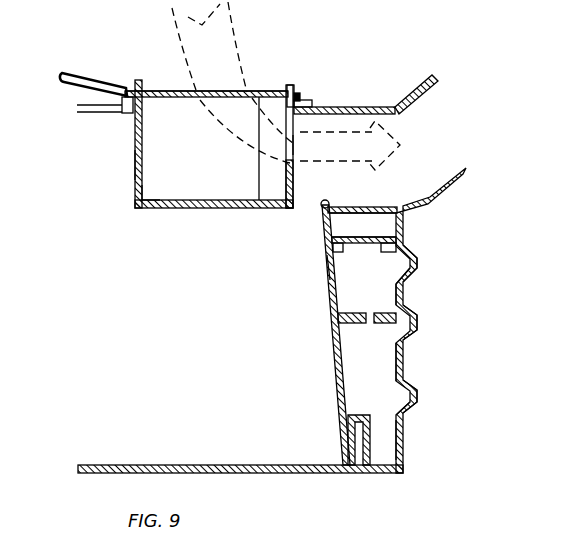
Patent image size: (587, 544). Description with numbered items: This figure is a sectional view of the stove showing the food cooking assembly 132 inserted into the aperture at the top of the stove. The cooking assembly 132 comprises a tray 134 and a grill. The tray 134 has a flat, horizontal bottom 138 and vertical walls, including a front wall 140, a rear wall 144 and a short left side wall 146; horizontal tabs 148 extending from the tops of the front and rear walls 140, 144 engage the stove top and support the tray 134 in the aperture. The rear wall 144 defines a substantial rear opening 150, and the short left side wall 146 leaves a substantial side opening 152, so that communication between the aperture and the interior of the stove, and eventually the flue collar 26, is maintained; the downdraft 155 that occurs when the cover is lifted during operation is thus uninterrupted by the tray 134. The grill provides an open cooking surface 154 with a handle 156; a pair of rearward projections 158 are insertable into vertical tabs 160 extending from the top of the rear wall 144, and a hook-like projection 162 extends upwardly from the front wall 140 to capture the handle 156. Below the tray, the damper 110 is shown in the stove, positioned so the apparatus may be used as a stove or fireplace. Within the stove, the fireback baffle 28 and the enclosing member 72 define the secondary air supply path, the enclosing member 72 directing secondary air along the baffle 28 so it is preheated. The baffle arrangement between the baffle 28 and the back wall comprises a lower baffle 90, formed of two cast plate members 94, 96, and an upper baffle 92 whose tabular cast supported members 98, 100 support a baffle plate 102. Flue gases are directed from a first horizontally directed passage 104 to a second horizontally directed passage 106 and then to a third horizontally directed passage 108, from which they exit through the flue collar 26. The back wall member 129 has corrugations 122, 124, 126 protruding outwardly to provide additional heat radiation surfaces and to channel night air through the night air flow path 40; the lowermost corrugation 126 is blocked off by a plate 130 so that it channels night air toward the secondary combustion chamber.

The flue collar 26 is at (412, 82).
The fireback baffle 28 is at (328, 300).
The night air flow path 40 is at (402, 412).
The enclosing member 72 is at (386, 452).
The lower baffle 90 is at (387, 312).
The upper baffle 92 is at (361, 247).
The cast plate member 94 is at (337, 350).
The cast plate member 96 is at (404, 345).
The tabular cast supported member 98 is at (328, 267).
The tabular cast supported member 100 is at (403, 260).
The baffle plate 102 is at (378, 236).
The first horizontally directed passage 104 is at (403, 369).
The second horizontally directed passage 106 is at (406, 287).
The third horizontally directed passage 108 is at (353, 125).
The damper 110 is at (347, 204).
The corrugation 122 is at (419, 266).
The corrugation 124 is at (418, 323).
The lowermost corrugation 126 is at (416, 395).
The lower wall portion 129 is at (401, 438).
The plate 130 is at (394, 408).
The food cooking assembly 132 is at (273, 57).
The tray 134 is at (134, 166).
The bottom 138 is at (163, 208).
The front wall 140 is at (134, 186).
The rear wall 144 is at (296, 196).
The left side wall 146 is at (262, 212).
The horizontal tabs 148 is at (128, 111).
The rear opening 150 is at (295, 145).
The side opening 152 is at (210, 180).
The open cooking surface 154 is at (173, 90).
The downdraft 155 is at (235, 33).
The handle 156 is at (80, 68).
The rearward projections 158 is at (299, 94).
The vertical tabs 160 is at (292, 86).
The hook-like projection 162 is at (136, 80).